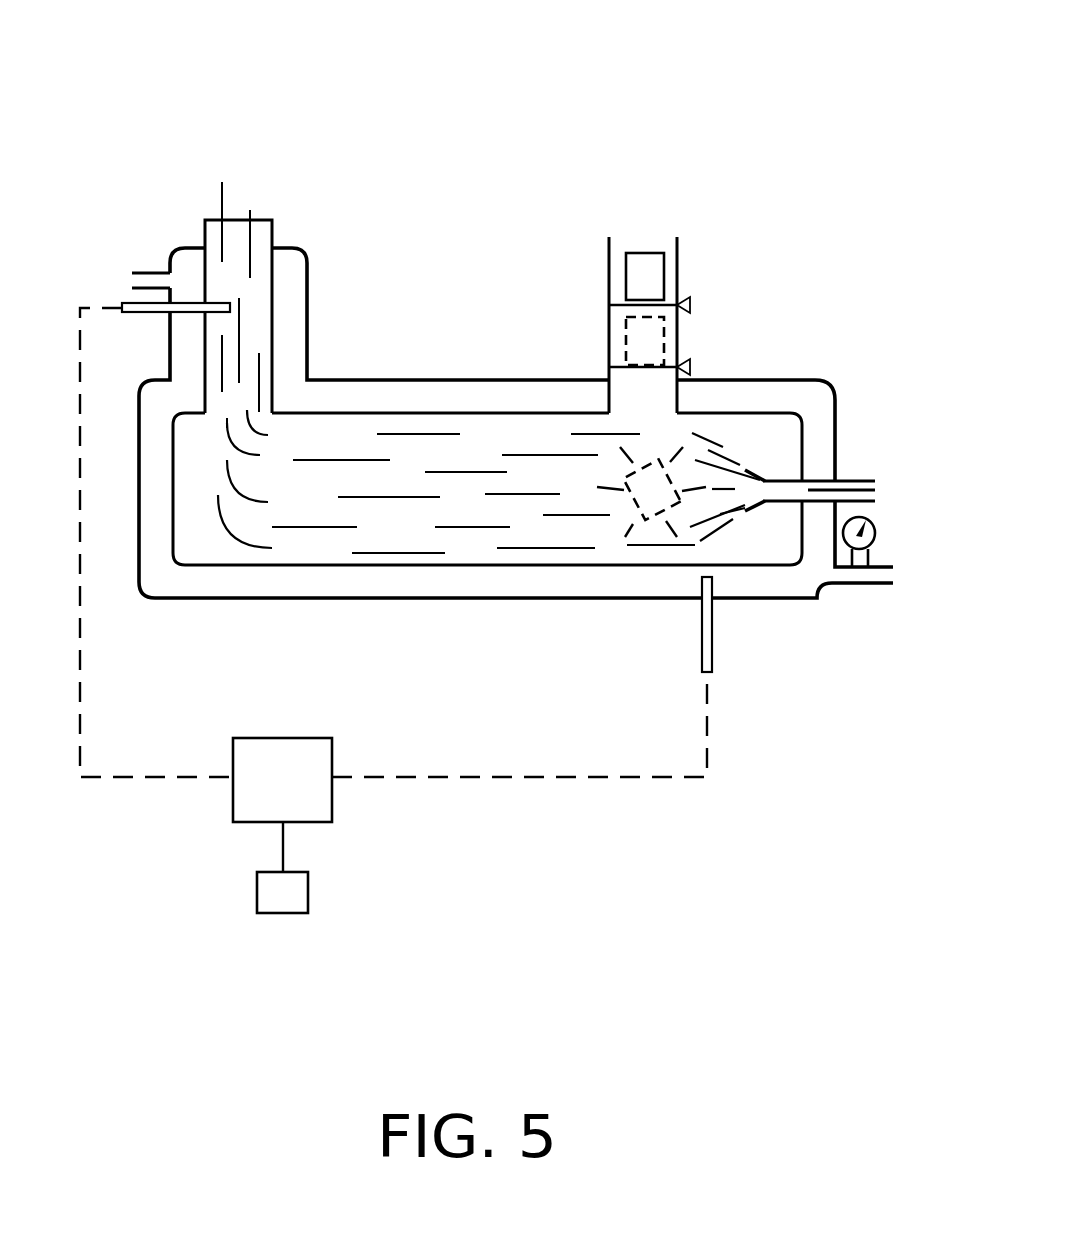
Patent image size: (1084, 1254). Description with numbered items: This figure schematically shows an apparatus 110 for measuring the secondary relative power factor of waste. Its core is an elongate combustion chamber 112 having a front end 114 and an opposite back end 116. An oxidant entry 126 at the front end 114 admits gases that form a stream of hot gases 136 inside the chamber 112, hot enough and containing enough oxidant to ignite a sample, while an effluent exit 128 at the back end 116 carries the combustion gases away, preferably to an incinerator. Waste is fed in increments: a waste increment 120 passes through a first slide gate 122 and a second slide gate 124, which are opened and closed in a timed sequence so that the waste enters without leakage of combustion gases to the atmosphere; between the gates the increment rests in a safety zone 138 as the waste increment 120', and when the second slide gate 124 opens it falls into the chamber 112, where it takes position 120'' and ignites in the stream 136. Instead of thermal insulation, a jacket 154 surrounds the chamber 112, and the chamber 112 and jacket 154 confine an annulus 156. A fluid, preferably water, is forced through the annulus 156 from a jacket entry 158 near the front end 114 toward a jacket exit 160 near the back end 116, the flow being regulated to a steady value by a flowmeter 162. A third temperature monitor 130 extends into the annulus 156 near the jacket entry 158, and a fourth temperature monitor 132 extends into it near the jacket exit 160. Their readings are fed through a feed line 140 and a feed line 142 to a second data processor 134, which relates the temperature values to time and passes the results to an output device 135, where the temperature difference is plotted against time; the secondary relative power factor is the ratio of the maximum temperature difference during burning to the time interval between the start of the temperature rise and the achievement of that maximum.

The apparatus 110 is at (578, 180).
The elongate combustion chamber 112 is at (472, 556).
The front end 114 is at (843, 407).
The back end 116 is at (182, 238).
The waste increment 120 is at (700, 233).
The article in lock 120' is at (575, 320).
The position of waste increment in chamber 120'' is at (649, 558).
The first slide gate 122 is at (668, 302).
The second slide gate 124 is at (637, 368).
The oxidant entry 126 is at (875, 490).
The effluent exit 128 is at (230, 228).
The third temperature monitor 130 is at (708, 642).
The fourth temperature monitor 132 is at (168, 308).
The second data processor 134 is at (287, 790).
The output device 135 is at (298, 893).
The stream of hot gases 136 is at (477, 463).
The safety zone 138 is at (678, 337).
The feed line 140 is at (500, 782).
The feed line 142 is at (82, 640).
The jacket 154 is at (223, 598).
The annulus 156 is at (500, 578).
The jacket entry 158 is at (867, 575).
The jacket exit 160 is at (122, 282).
The flowmeter 162 is at (878, 533).